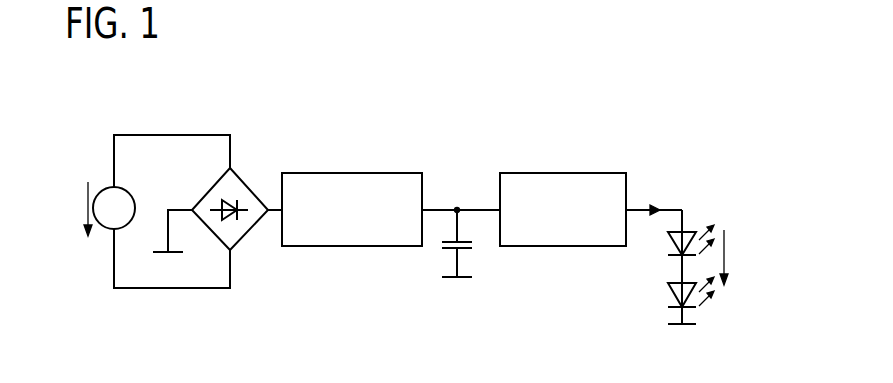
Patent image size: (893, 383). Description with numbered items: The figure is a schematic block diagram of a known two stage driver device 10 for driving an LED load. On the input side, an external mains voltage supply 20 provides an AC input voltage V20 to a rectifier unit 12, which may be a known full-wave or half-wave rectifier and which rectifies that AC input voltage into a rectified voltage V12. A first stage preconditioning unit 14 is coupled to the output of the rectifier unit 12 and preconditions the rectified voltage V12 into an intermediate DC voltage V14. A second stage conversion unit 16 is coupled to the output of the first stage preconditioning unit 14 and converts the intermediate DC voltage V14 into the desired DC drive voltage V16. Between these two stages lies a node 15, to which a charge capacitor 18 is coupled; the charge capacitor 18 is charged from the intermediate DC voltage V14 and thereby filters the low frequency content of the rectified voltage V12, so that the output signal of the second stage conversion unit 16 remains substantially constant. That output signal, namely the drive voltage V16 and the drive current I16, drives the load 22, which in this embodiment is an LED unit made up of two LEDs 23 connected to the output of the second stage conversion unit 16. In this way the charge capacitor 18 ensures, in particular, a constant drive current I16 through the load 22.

The two stage driver device 10 is at (467, 93).
The rectifier unit 12 is at (237, 175).
The first stage preconditioning unit 14 is at (359, 173).
The node 15 is at (460, 213).
The second stage conversion unit 16 is at (572, 173).
The charge capacitor 18 is at (445, 249).
The external mains voltage supply 20 is at (106, 229).
The load 22 is at (654, 286).
The LED 23 is at (675, 251).
The AC input voltage V20 is at (87, 214).
The rectified voltage V12 is at (273, 217).
The intermediate DC voltage V14 is at (461, 192).
The drive current I16 is at (657, 198).
The drive voltage V16 is at (724, 232).